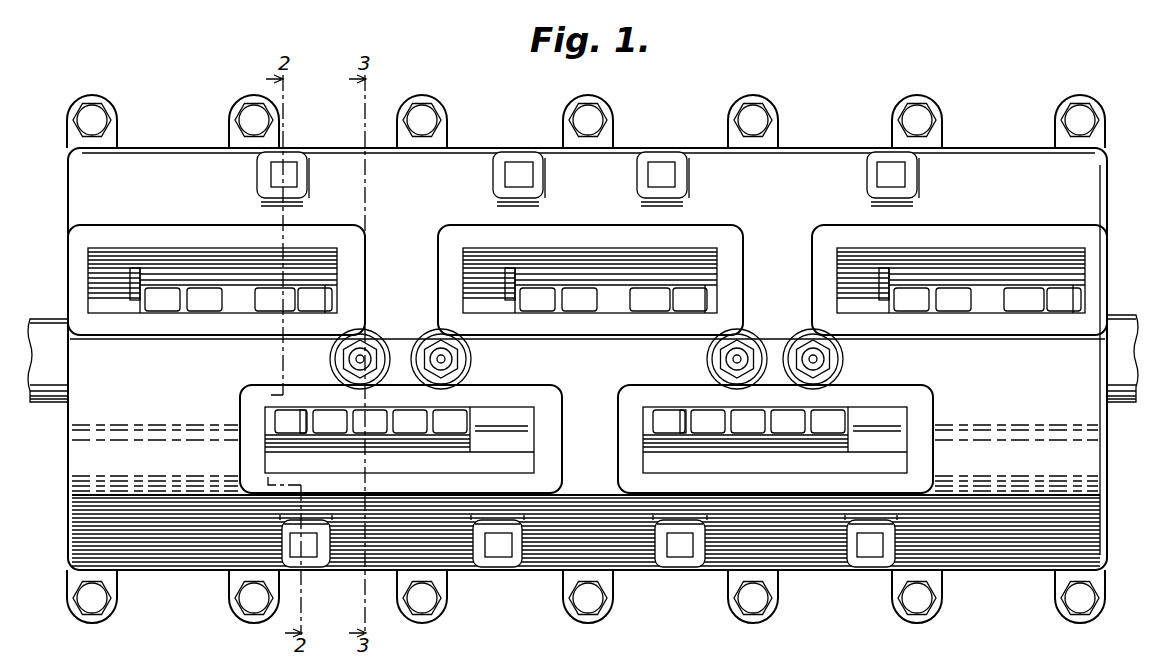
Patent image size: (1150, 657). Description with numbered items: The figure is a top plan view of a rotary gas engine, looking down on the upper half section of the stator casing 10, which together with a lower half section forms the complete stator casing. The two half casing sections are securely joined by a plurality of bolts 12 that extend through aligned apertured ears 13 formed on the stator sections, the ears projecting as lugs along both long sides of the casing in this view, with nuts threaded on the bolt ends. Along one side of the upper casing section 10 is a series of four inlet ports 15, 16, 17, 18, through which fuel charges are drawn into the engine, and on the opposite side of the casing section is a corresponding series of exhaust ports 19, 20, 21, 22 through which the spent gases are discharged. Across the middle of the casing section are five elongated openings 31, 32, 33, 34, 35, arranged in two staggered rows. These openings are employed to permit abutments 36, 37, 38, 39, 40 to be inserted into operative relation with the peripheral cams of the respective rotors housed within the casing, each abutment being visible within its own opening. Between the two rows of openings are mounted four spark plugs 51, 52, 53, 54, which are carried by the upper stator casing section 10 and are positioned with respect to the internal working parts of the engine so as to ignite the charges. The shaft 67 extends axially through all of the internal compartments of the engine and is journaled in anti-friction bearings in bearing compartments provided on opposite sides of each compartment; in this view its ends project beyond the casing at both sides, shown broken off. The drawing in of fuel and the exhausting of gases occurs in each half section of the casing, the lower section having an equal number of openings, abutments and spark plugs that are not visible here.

The upper half section of the stator casing 10 is at (170, 147).
The bolts 12 is at (435, 118).
The apertured ears 13 is at (428, 97).
The inlet port 15 is at (292, 165).
The inlet port 16 is at (520, 167).
The inlet port 17 is at (663, 165).
The inlet port 18 is at (888, 170).
The exhaust port 19 is at (302, 550).
The exhaust port 20 is at (500, 552).
The exhaust port 21 is at (678, 552).
The exhaust port 22 is at (866, 552).
The elongated opening 31 is at (88, 294).
The elongated opening 32 is at (265, 420).
The elongated opening 33 is at (463, 293).
The elongated opening 34 is at (643, 420).
The elongated opening 35 is at (837, 292).
The abutment 36 is at (135, 290).
The abutment 37 is at (302, 430).
The abutment 38 is at (518, 292).
The abutment 39 is at (862, 430).
The abutment 40 is at (900, 292).
The spark plug 51 is at (368, 350).
The spark plug 52 is at (450, 357).
The spark plug 53 is at (742, 352).
The spark plug 54 is at (822, 358).
The shaft 67 is at (42, 334).